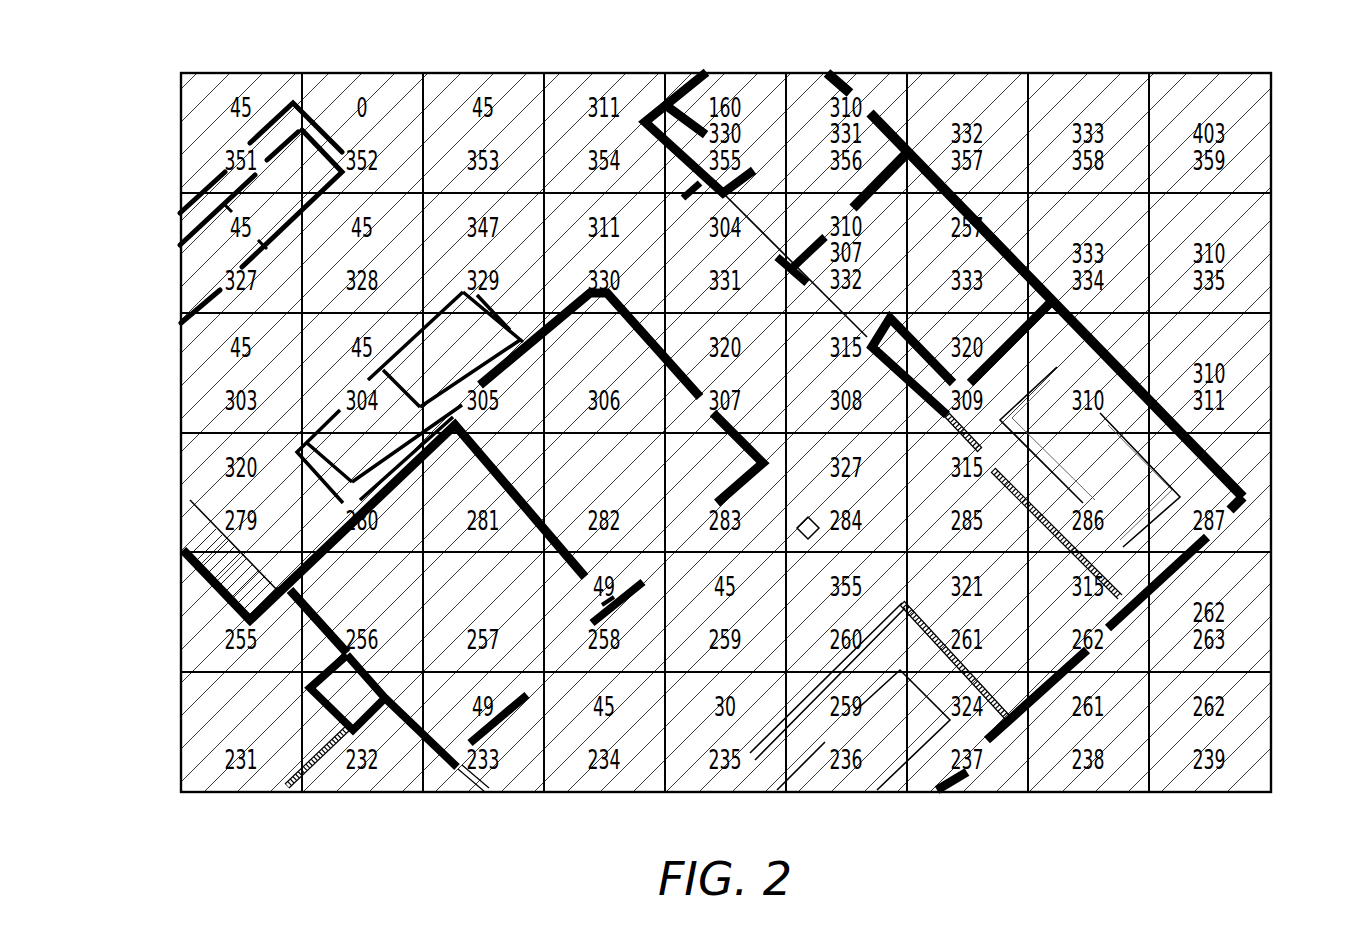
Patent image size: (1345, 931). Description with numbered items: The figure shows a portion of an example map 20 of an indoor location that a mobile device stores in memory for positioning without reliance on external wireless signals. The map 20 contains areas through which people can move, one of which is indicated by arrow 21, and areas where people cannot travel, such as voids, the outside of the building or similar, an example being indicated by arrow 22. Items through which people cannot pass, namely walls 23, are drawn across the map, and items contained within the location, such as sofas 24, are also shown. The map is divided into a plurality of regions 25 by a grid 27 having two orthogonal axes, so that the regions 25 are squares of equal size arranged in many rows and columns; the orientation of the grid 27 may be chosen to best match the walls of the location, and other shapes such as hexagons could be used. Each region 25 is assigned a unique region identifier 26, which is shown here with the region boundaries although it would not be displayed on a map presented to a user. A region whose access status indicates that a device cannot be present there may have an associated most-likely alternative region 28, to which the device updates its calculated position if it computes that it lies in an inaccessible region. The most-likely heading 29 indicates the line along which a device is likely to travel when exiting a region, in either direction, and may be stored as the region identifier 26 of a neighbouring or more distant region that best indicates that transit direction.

The map 20 is at (802, 64).
The arrow 21 is at (392, 662).
The arrow 22 is at (1244, 225).
The walls 23 is at (203, 583).
The sofas 24 is at (289, 124).
The regions 25 is at (682, 770).
The region identifier 26 is at (1248, 162).
The grid 27 is at (1027, 767).
The most-likely alternative region 28 is at (1087, 116).
The most-likely heading 29 is at (612, 88).